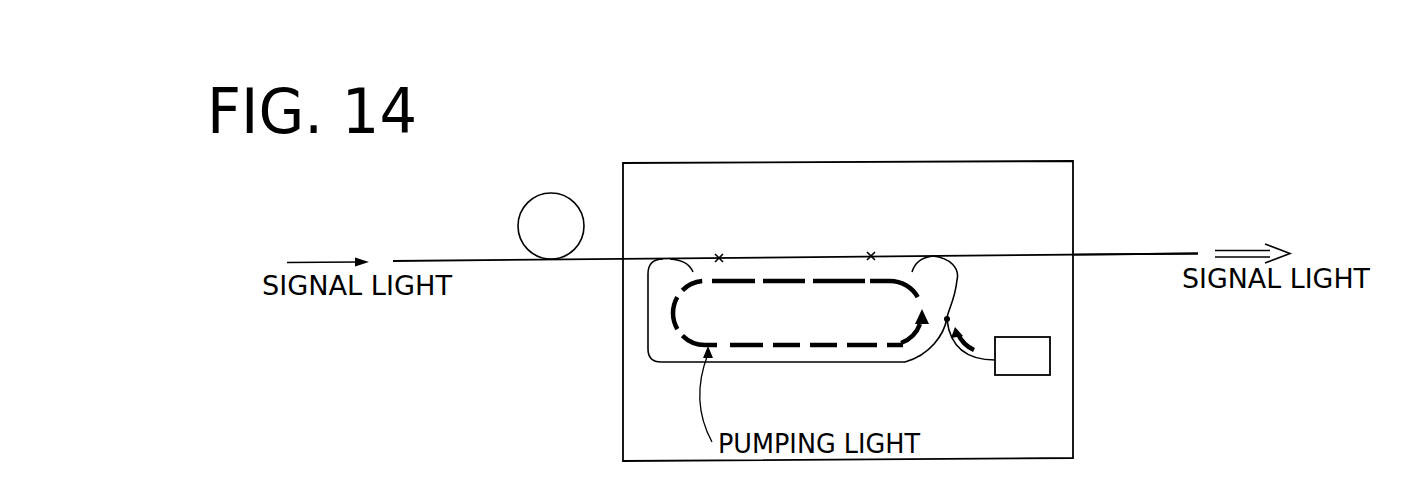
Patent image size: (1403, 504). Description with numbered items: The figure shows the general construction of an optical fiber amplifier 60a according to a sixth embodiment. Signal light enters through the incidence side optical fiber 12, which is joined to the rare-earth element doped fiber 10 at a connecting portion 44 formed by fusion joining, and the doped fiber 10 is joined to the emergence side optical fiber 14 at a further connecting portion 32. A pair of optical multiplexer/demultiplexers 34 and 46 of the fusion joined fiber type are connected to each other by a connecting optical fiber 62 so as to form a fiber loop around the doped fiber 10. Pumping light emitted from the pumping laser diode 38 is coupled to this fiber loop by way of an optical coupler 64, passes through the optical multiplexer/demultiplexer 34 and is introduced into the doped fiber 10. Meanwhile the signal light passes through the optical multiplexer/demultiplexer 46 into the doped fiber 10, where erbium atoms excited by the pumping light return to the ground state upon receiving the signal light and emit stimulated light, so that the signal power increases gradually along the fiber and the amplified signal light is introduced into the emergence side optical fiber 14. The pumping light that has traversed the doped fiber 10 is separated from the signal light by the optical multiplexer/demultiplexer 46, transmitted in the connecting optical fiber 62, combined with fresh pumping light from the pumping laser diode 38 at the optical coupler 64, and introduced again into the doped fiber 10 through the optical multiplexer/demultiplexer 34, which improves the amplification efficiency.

The rare-earth element doped fiber 10 is at (798, 257).
The incidence side optical fiber 12 is at (550, 193).
The emergence side optical fiber 14 is at (1137, 255).
The connecting portion 32 is at (870, 255).
The optical multiplexer/demultiplexer 34 is at (934, 256).
The pumping laser diode 38 is at (1050, 353).
The connecting portion 44 is at (719, 256).
The optical multiplexer/demultiplexer 46 is at (672, 257).
The optical fiber amplifier 60a is at (869, 157).
The connecting optical fiber 62 is at (863, 362).
The optical coupler 64 is at (950, 317).